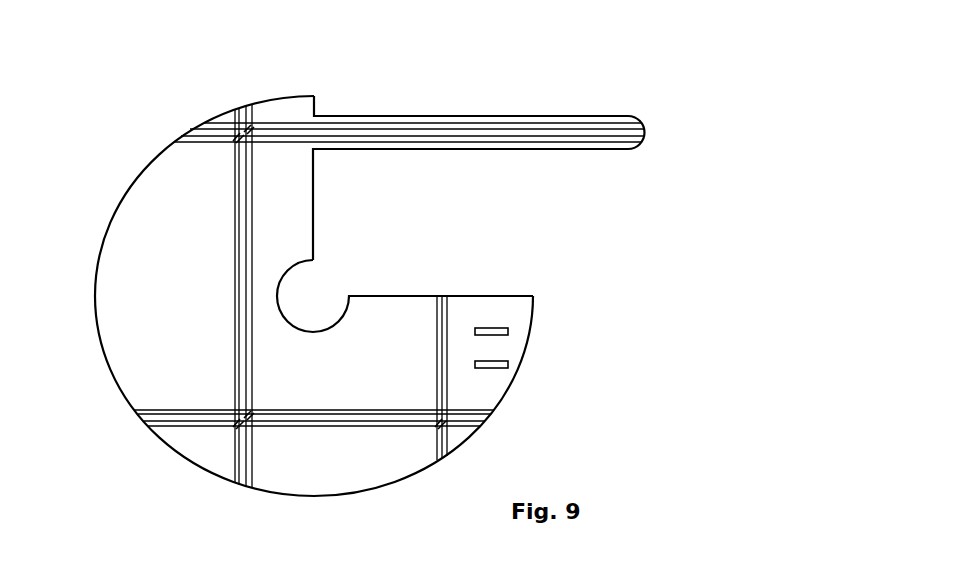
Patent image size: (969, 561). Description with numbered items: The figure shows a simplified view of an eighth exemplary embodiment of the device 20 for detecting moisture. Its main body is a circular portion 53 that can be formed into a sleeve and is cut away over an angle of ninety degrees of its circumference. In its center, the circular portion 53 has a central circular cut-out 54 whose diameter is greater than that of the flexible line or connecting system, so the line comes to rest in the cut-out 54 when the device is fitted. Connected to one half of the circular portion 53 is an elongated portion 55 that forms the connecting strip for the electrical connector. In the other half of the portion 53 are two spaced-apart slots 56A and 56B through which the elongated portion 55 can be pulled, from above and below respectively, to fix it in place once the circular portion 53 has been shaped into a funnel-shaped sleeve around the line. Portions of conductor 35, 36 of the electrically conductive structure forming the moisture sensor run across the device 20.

The device for detecting moisture 20 is at (282, 283).
The portion of conductor 35 is at (368, 123).
The portion of conductor 36 is at (234, 233).
The circular portion 53 is at (126, 341).
The central circular cut-out 54 is at (303, 323).
The elongated portion 55 is at (468, 108).
The slot 56A is at (508, 332).
The slot 56B is at (508, 365).